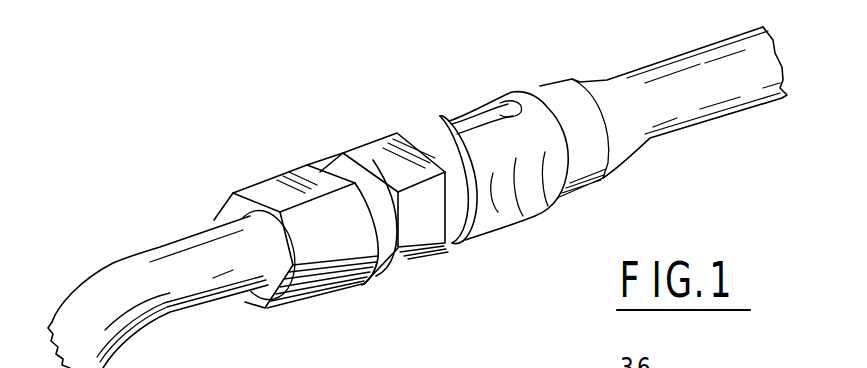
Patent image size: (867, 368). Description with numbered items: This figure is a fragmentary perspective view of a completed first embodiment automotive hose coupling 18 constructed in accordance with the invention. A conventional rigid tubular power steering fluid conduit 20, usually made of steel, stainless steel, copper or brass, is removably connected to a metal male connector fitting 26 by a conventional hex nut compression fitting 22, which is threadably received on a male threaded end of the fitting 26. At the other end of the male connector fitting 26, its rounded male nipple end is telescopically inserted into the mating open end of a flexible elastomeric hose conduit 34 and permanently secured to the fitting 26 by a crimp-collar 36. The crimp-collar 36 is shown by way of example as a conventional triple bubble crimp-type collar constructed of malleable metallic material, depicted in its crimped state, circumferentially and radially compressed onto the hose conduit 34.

The coupling 18 is at (417, 186).
The rigid tubular power steering fluid conduit 20 is at (159, 276).
The hex nut compression fitting 22 is at (296, 213).
The male connector fitting 26 is at (398, 178).
The flexible elastomeric hose conduit 34 is at (663, 101).
The crimp-collar 36 is at (508, 139).